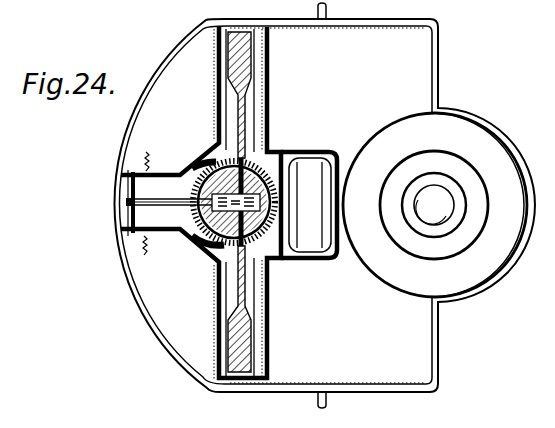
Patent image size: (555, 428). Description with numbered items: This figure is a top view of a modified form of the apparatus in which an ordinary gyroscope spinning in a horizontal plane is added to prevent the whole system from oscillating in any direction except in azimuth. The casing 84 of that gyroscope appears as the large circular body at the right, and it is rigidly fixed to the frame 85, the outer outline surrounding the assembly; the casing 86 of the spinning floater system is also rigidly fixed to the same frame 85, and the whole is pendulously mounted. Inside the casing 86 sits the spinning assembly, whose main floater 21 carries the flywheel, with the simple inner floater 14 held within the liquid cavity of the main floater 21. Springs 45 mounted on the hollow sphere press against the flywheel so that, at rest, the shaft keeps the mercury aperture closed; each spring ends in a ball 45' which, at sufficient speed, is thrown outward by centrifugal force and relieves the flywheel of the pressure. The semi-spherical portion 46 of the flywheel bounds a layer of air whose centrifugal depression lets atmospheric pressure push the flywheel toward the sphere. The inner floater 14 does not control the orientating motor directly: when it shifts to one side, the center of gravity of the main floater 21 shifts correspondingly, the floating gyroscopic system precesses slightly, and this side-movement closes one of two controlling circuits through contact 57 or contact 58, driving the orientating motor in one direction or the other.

The frame 85 is at (136, 306).
The casing of the gyroscope 84 is at (435, 205).
The casing 86 is at (216, 110).
The springs 45 is at (263, 202).
The ball 45' is at (272, 207).
The semi-spherical portion of the flywheel 46 is at (208, 163).
The inner floater 14 is at (249, 167).
The main floater 21 is at (281, 207).
The contact 57 is at (135, 199).
The contact 58 is at (135, 206).